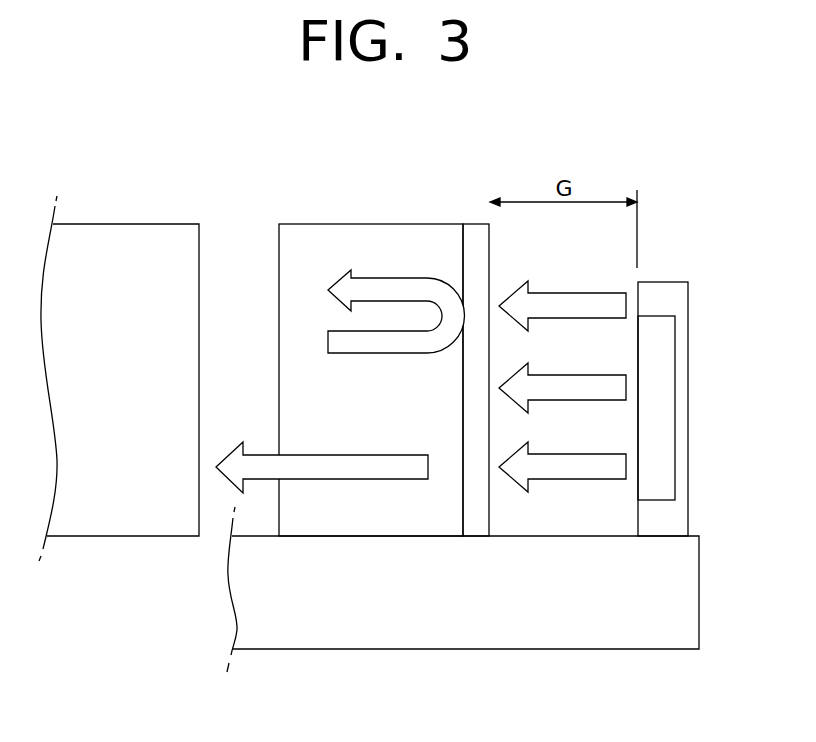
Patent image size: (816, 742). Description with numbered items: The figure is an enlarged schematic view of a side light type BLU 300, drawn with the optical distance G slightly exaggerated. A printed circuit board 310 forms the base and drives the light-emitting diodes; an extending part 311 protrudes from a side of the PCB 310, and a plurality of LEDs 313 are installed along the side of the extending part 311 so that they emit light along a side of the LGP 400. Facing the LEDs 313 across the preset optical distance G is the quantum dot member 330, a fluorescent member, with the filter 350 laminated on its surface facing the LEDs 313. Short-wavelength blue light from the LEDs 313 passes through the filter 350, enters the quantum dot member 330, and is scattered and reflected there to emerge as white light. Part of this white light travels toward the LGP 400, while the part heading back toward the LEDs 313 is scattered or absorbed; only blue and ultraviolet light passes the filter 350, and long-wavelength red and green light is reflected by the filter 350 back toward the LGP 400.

The side light type BLU 300 is at (424, 179).
The printed circuit board 310 is at (597, 648).
The extending part 311 is at (683, 367).
The LEDs 313 is at (667, 405).
The quantum dot member 330 is at (378, 228).
The filter 350 is at (478, 228).
The LGP 400 is at (155, 228).